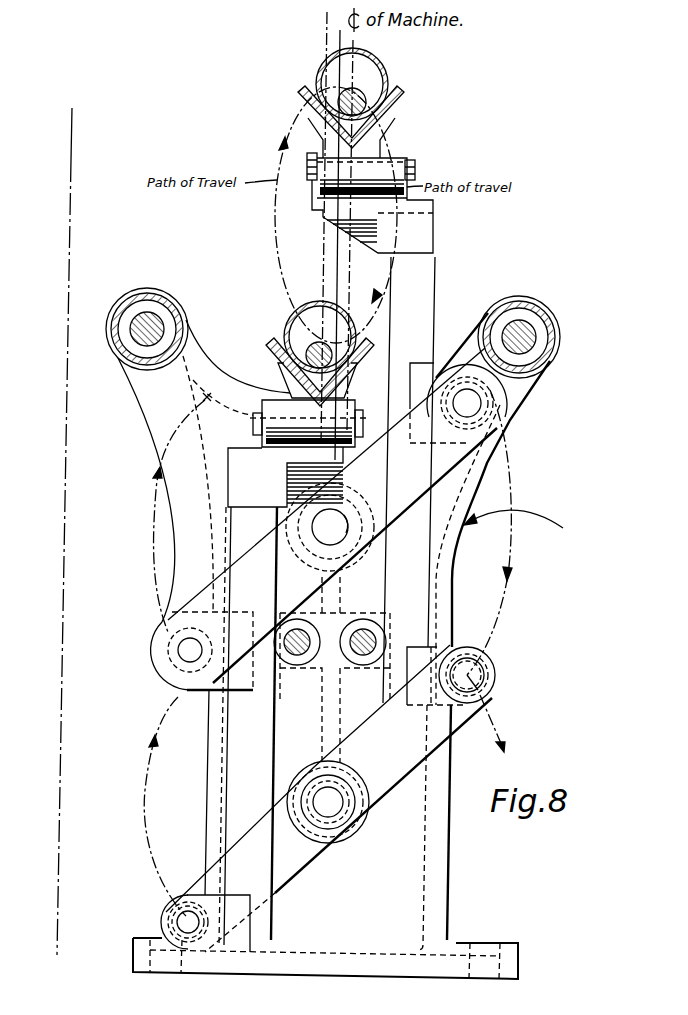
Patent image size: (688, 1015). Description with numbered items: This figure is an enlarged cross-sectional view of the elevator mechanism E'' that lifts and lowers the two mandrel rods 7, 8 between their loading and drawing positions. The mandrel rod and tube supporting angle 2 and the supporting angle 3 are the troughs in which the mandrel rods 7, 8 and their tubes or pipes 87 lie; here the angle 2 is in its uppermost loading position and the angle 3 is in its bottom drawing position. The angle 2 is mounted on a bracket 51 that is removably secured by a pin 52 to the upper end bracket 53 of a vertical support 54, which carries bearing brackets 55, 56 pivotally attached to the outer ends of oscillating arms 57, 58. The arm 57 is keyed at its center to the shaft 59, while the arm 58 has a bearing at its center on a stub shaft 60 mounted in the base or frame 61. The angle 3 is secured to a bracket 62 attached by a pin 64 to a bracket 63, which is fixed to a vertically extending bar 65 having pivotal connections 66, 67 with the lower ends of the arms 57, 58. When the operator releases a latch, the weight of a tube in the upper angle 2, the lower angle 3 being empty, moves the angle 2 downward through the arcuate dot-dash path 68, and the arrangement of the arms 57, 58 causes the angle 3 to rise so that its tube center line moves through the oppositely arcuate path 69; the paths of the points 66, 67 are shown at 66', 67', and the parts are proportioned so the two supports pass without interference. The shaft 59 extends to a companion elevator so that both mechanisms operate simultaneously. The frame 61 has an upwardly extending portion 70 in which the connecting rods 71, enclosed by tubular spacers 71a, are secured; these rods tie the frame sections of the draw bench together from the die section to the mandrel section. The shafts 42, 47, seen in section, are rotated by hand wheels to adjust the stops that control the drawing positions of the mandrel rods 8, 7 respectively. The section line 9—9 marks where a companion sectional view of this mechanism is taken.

The mandrel rod and tube supporting angle 2 is at (399, 99).
The tube and mandrel rod supporting angle 3 is at (363, 352).
The mandrel rod 7 is at (366, 102).
The mandrel rod 8 is at (306, 352).
The section line 9- 9 is at (71, 122).
The shaft 42 is at (363, 665).
The shaft 47 is at (297, 665).
The bracket 51 is at (372, 147).
The pin 52 is at (416, 170).
The upper end bracket 53 is at (430, 215).
The vertical support 54 is at (434, 290).
The bearing bracket 55 is at (432, 446).
The bearing bracket 56 is at (417, 657).
The oscillating arm 57 is at (422, 483).
The oscillating arm 58 is at (398, 765).
The shaft 59 is at (346, 545).
The stub shaft 60 is at (340, 803).
The base or frame 61 is at (425, 890).
The bracket 62 is at (280, 373).
The bracket 63 is at (243, 458).
The pin 64 is at (253, 427).
The vertically extending bar 65 is at (243, 733).
The pivotal connection 66 is at (185, 651).
The path of point 66 66' is at (161, 516).
The pivotal connection 67 is at (187, 923).
The path of point 67 67' is at (145, 806).
The arcuate path 68 is at (405, 237).
The arcuate path 69 is at (277, 247).
The upwardly extending portion 70 is at (152, 383).
The connecting rod 71 is at (148, 330).
The tubular spacer 71a is at (152, 302).
The pipe 87 is at (378, 58).
The elevator mechanism E'' is at (530, 571).